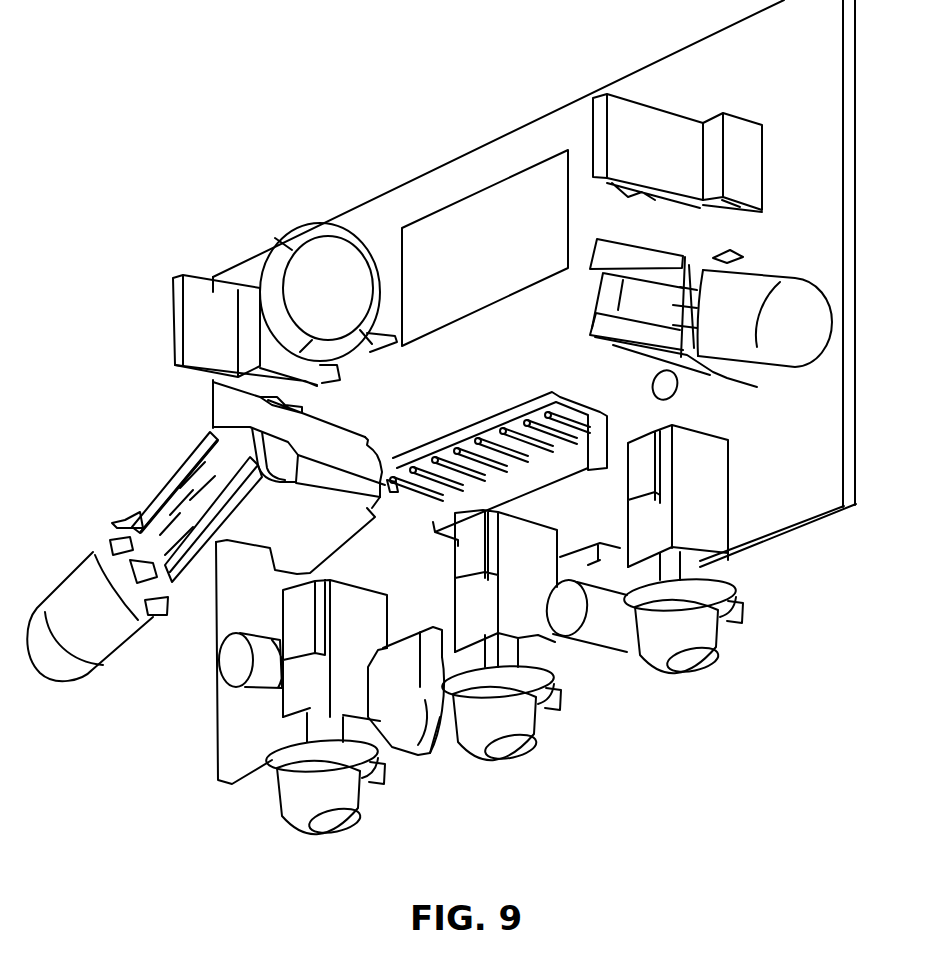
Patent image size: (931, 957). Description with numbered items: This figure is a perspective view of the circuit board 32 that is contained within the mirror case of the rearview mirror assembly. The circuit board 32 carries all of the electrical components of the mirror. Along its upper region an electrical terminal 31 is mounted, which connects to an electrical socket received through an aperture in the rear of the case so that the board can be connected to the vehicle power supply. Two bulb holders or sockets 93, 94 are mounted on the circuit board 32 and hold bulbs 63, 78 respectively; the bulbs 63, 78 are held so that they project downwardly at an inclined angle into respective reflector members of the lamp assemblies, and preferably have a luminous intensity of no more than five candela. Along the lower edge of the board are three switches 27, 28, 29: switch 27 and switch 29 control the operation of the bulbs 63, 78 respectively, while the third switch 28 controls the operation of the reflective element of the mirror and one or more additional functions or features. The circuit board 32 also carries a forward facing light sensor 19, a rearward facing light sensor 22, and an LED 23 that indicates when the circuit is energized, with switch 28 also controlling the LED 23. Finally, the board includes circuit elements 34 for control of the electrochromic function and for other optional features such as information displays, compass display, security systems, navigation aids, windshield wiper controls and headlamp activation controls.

The forward facing light sensor 19 is at (235, 667).
The rearward facing light sensor 22 is at (417, 748).
The LED 23 is at (627, 652).
The switch 27 is at (687, 657).
The switch 28 is at (505, 750).
The switch 29 is at (328, 817).
The electrical terminal 31 is at (605, 447).
The circuit board 32 is at (836, 204).
The circuit elements 34 is at (508, 213).
The bulb 63 is at (797, 317).
The bulb 78 is at (72, 664).
The bulb holder or socket 93 is at (626, 263).
The bulb holder or socket 94 is at (177, 487).